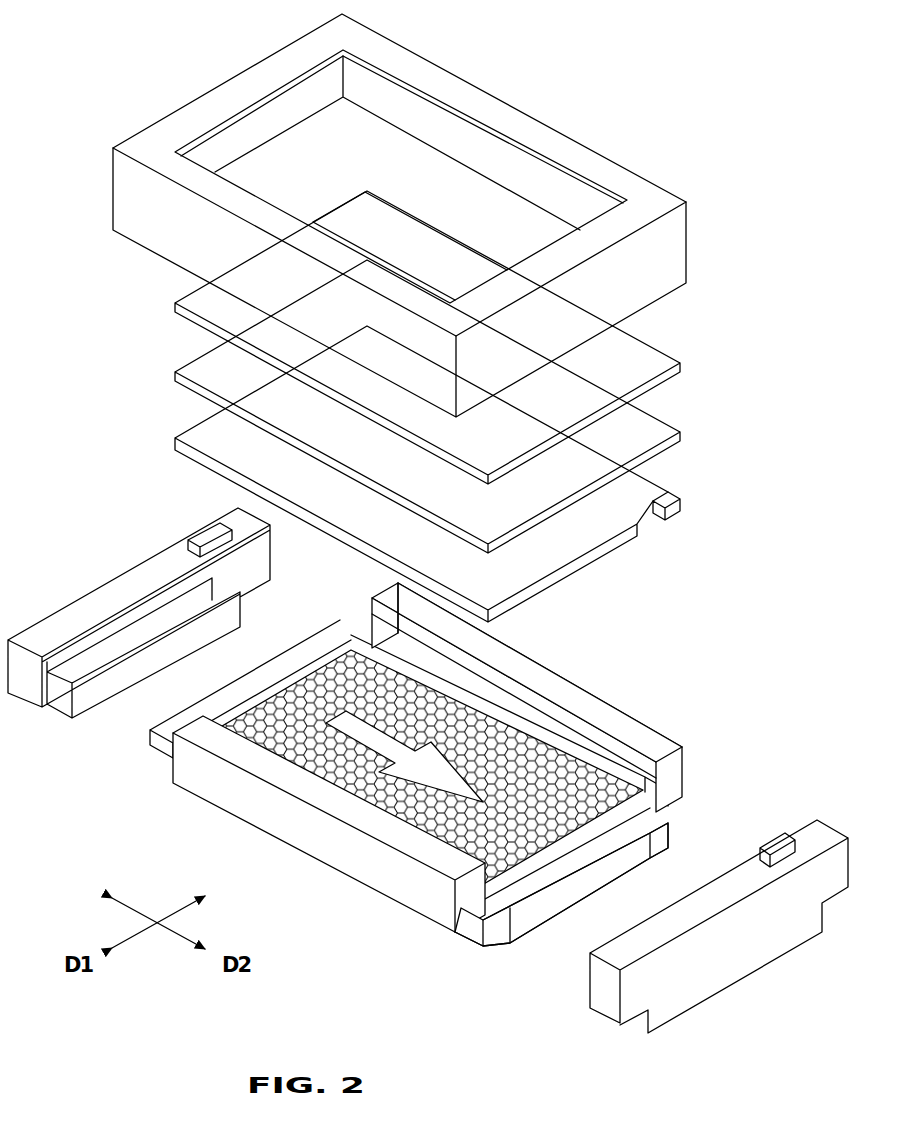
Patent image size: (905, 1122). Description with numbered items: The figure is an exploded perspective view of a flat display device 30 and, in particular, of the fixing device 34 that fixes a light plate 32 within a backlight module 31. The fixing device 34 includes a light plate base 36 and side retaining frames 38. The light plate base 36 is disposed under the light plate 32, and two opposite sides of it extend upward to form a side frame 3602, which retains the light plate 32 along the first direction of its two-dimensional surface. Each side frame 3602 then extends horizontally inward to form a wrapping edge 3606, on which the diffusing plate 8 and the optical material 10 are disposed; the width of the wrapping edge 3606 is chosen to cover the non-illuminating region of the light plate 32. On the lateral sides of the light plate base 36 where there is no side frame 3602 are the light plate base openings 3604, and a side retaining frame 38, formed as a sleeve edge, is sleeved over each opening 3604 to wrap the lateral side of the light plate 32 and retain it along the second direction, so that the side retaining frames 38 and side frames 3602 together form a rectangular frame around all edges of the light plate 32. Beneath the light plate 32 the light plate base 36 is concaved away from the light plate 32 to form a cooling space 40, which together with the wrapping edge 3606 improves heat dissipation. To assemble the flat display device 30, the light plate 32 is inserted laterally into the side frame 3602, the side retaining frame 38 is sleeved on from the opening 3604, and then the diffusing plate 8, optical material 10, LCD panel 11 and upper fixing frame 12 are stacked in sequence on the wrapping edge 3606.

The flat display device 30 is at (694, 66).
The upper fixing frame 12 is at (680, 245).
The LCD panel 11 is at (680, 362).
The optical material 10 is at (680, 431).
The diffusing plate 8 is at (680, 497).
The backlight module 31 is at (781, 378).
The light plate 32 is at (542, 758).
The fixing device 34 is at (783, 750).
The light plate base 36 is at (424, 795).
The side frame 3602 is at (680, 772).
The light plate base opening 3604 is at (543, 886).
The wrapping edge 3606 is at (228, 748).
The side retaining frame 38 is at (150, 566).
The cooling space 40 is at (494, 916).